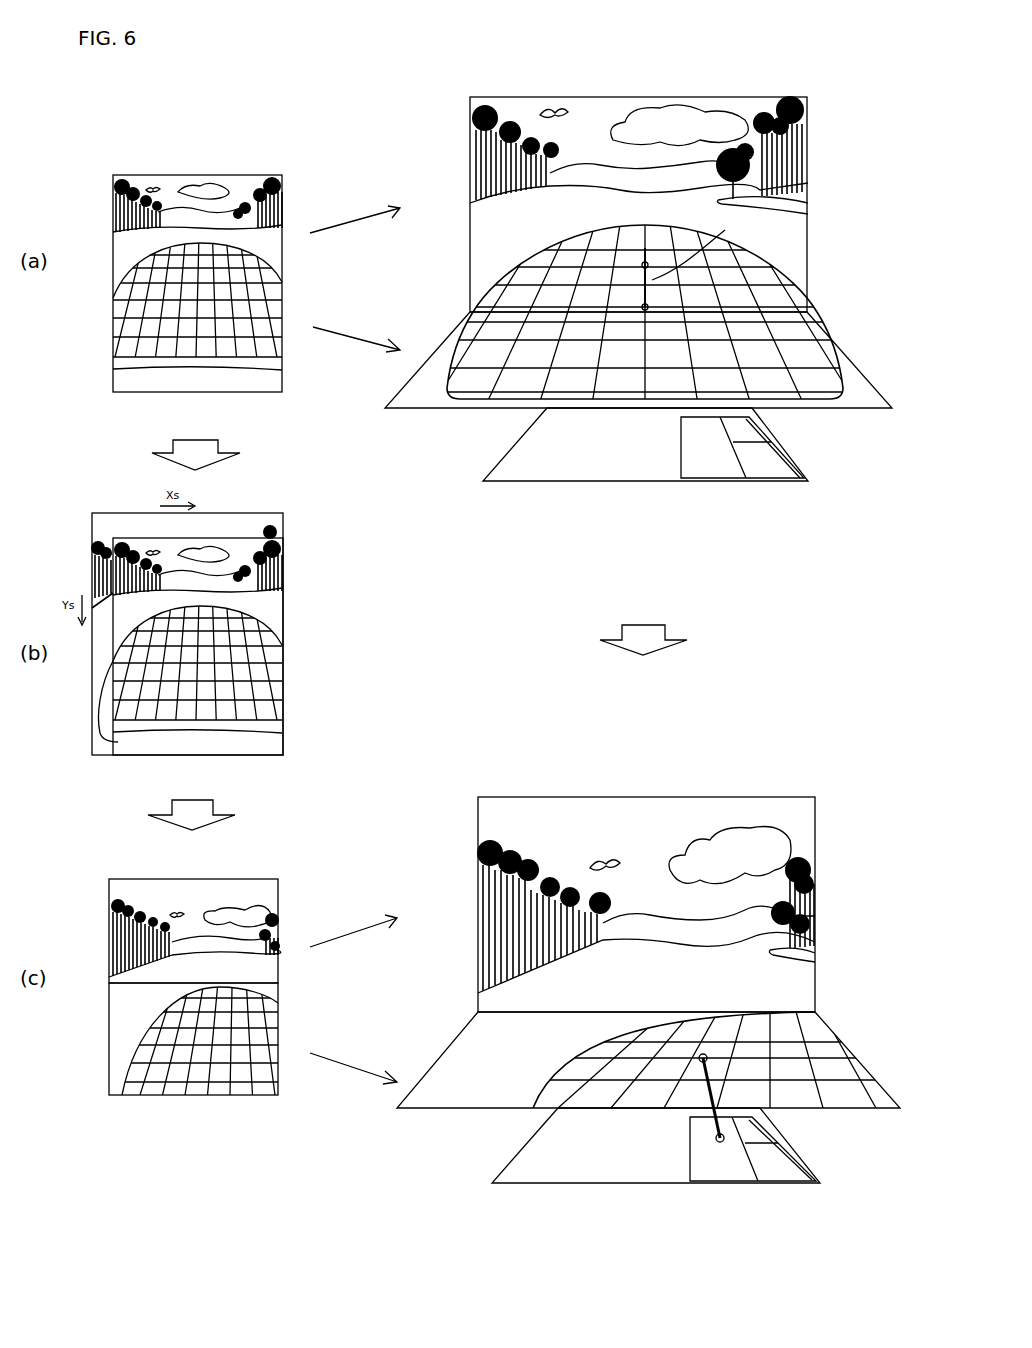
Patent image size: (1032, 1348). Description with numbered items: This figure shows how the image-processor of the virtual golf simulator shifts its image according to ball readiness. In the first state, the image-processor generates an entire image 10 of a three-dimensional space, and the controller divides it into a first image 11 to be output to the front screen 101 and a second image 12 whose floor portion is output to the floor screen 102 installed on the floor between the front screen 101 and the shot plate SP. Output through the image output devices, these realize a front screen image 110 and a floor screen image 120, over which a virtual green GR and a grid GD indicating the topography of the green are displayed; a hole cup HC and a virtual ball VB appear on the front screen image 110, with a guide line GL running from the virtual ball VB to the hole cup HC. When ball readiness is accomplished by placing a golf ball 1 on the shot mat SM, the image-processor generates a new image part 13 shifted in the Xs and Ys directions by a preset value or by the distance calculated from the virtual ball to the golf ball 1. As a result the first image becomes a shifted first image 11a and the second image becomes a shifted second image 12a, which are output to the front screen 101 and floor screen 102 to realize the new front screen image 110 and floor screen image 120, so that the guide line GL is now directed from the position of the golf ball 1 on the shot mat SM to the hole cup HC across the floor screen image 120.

The entire image 10 is at (190, 172).
The first image 11 is at (113, 217).
The second image 12 is at (113, 340).
The new image part 13 is at (292, 526).
The shifted first image 11a is at (109, 923).
The shifted second image 12a is at (109, 1037).
The front screen 101 is at (807, 125).
The front screen image 110 is at (795, 238).
The floor screen 102 is at (820, 330).
The floor screen image 120 is at (861, 368).
The virtual green GR is at (590, 240).
The grid GD is at (528, 272).
The hole cup HC is at (652, 248).
The virtual ball VB is at (642, 262).
The guide line GL is at (730, 1091).
The shot plate SP is at (519, 440).
The shot mat SM is at (670, 444).
The golf ball 1 is at (714, 1137).